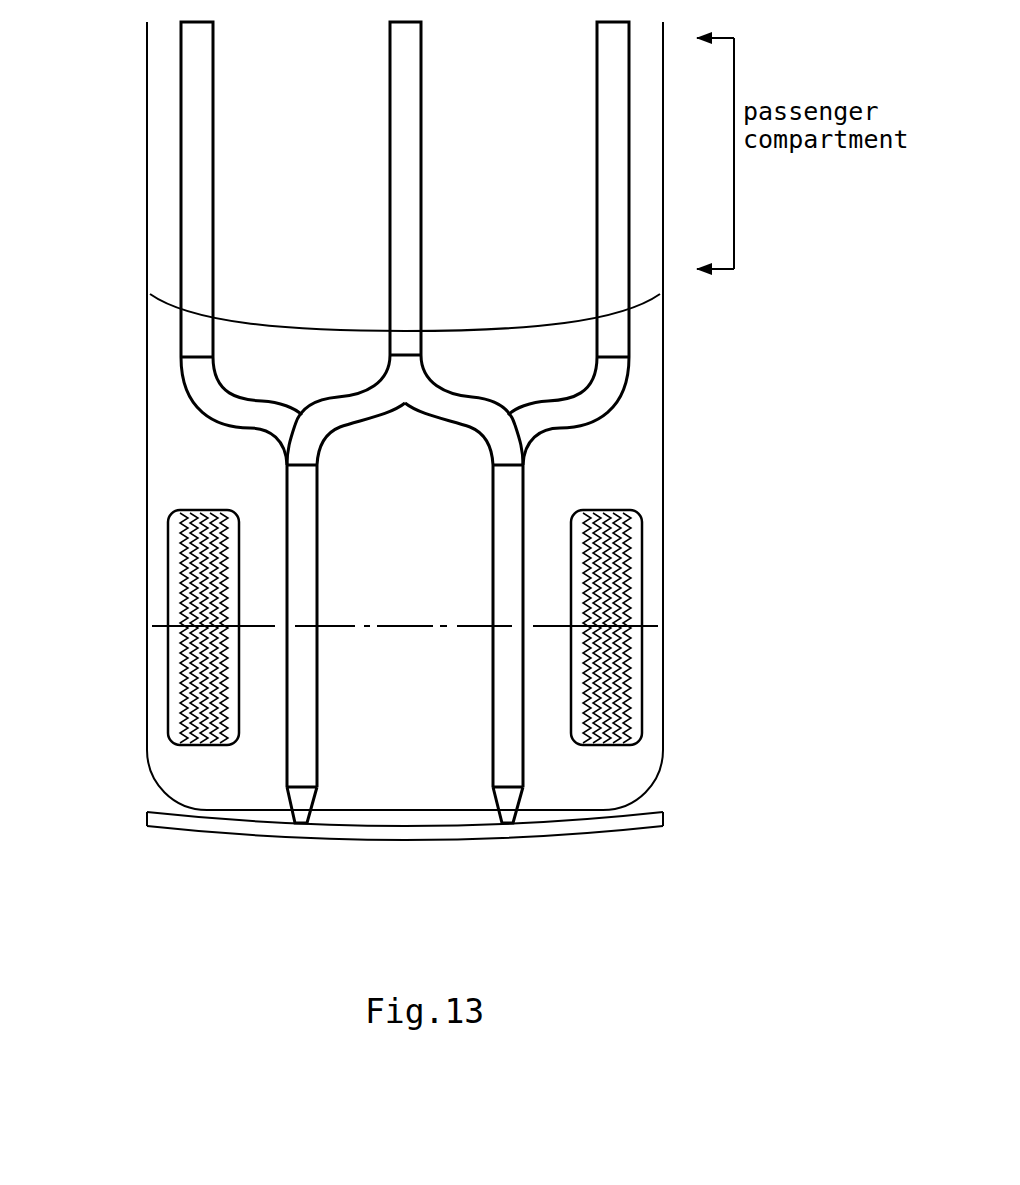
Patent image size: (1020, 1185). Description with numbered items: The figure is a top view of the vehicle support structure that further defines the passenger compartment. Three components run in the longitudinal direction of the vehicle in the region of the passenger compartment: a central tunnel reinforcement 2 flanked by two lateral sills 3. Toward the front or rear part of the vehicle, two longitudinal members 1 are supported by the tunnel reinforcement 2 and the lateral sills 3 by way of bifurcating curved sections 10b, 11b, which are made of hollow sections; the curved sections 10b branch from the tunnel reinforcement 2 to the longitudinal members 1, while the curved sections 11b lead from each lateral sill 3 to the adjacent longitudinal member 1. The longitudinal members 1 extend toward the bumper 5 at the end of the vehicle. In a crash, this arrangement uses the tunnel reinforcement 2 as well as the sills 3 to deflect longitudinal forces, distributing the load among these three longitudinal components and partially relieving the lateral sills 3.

The longitudinal member 1 is at (268, 644).
The tunnel reinforcement 2 is at (400, 183).
The lateral sill 3 is at (195, 183).
The bumper 5 is at (568, 827).
The bifurcating curved section 10b is at (330, 438).
The bifurcating curved section 11b is at (237, 412).